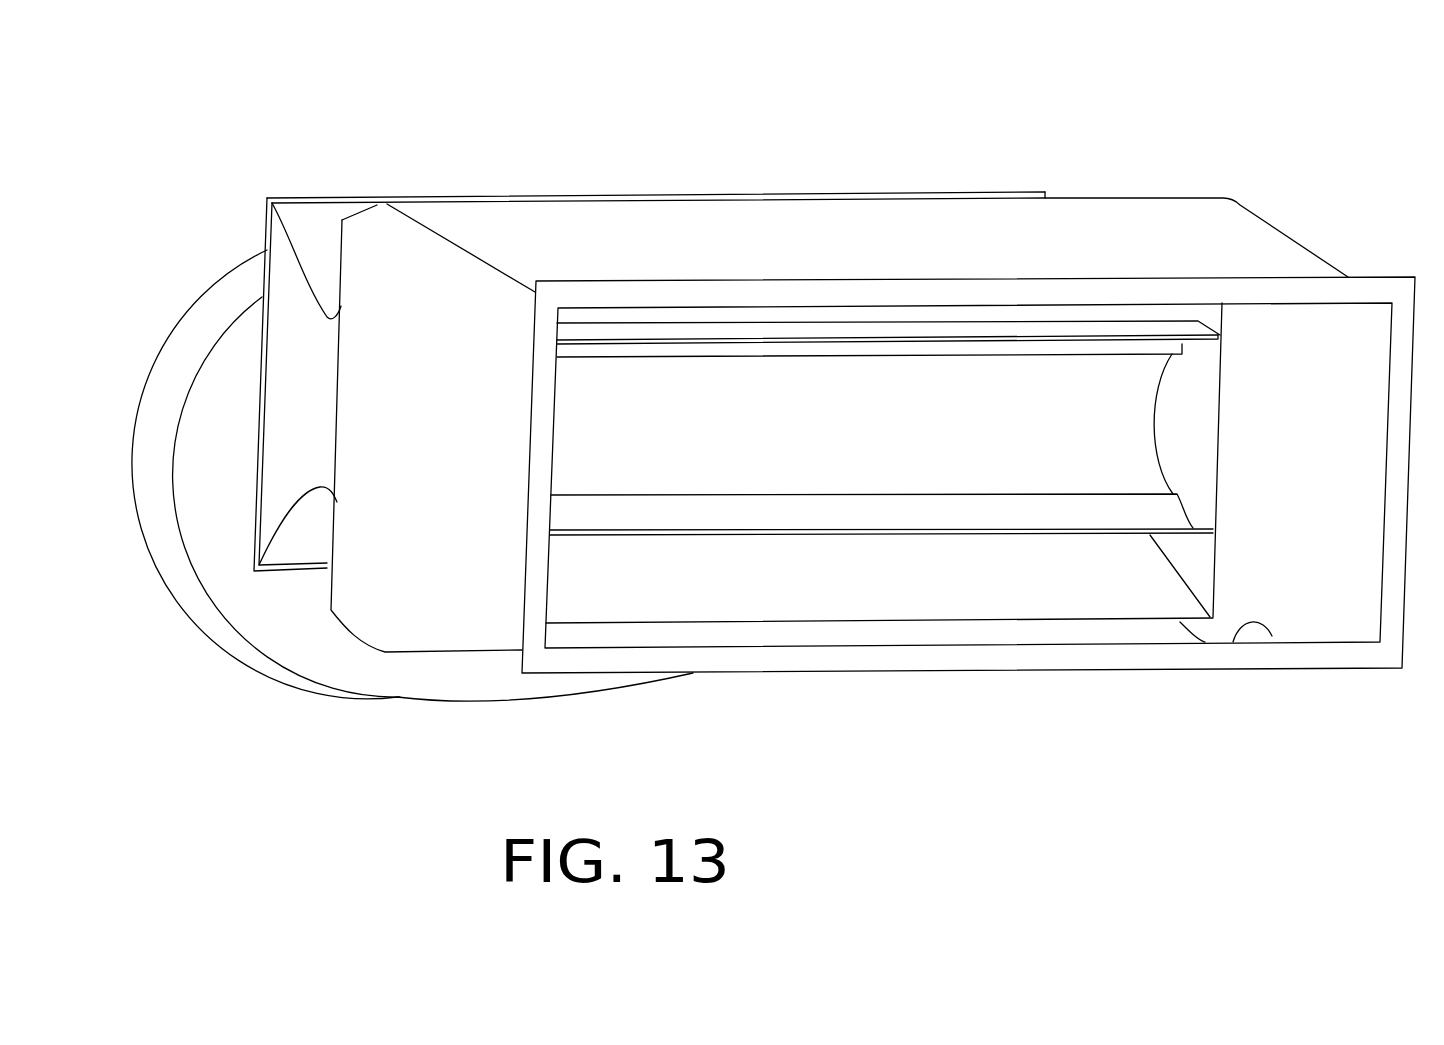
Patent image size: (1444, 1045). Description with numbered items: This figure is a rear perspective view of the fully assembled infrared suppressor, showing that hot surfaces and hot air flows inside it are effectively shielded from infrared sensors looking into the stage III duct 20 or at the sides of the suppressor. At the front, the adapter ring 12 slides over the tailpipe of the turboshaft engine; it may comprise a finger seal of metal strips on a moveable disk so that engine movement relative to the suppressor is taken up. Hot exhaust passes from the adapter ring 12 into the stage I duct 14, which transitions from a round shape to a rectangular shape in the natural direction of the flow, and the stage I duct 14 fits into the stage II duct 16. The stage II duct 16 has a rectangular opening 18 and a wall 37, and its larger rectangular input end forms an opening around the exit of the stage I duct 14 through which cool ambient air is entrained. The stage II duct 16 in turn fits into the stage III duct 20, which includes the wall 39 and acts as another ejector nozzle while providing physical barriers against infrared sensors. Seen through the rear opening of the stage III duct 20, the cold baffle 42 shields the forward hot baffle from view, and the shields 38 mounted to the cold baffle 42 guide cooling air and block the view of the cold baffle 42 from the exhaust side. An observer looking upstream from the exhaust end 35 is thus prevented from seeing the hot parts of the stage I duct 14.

The adapter ring 12 is at (183, 353).
The stage I duct 14 is at (320, 663).
The stage II duct 16 is at (320, 265).
The rectangular opening 18 is at (308, 197).
The stage III duct 20 is at (1293, 228).
The exhaust end 35 is at (1272, 636).
The wall 37 is at (338, 212).
The shields 38 is at (952, 342).
The wall 39 is at (890, 259).
The cold baffle 42 is at (1127, 327).